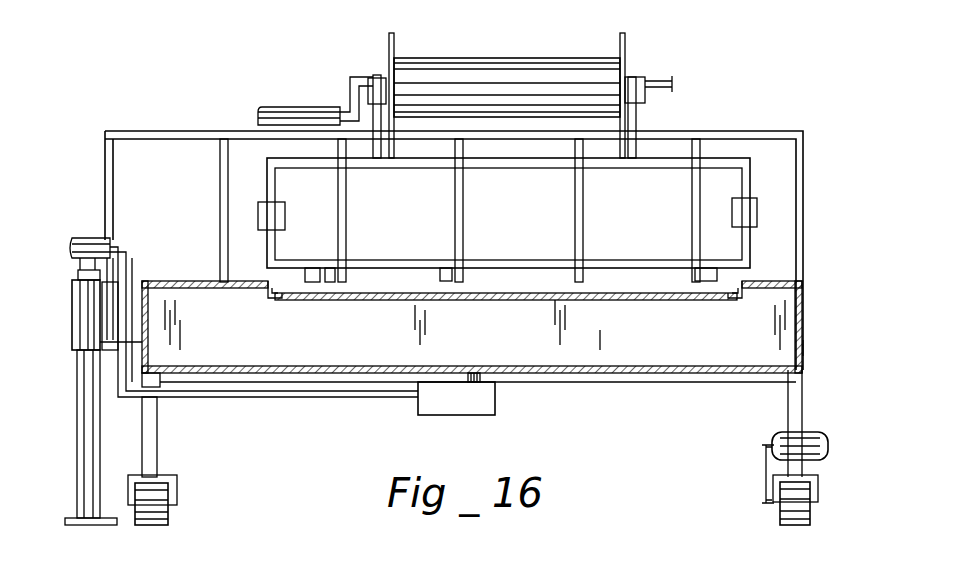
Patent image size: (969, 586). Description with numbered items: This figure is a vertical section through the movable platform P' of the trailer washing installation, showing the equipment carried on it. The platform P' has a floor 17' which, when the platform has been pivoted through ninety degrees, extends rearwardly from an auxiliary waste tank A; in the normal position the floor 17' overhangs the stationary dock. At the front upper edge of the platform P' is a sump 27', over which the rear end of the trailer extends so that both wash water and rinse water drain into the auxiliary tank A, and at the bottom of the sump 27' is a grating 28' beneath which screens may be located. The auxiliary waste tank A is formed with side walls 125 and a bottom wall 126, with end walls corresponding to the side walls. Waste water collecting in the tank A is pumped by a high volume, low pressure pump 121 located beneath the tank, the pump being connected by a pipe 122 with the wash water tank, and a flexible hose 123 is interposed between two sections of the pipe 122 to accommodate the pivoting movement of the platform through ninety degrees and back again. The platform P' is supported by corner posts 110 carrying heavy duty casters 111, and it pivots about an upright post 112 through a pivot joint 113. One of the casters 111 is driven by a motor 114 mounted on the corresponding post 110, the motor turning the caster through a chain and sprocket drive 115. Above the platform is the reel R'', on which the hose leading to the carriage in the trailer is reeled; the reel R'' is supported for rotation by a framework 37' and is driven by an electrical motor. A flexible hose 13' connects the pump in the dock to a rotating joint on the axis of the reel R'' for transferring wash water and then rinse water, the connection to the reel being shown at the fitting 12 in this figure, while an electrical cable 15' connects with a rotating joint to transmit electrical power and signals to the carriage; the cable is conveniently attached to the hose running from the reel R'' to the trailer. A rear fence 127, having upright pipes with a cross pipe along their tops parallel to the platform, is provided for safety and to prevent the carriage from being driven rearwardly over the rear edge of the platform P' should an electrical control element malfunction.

The rear fence 127 is at (740, 130).
The reel R'' is at (506, 83).
The electrical cable 15' is at (670, 70).
The elbow conduit 12 is at (358, 77).
The flexible hose 13' is at (295, 99).
The framework 37' is at (525, 211).
The floor 17' is at (504, 308).
The bottom wall 126 is at (332, 366).
The grating 28' is at (506, 318).
The sump 27' is at (505, 308).
The side walls 125 is at (148, 338).
The platform P' is at (837, 334).
The auxiliary waste tank A is at (606, 347).
The flexible hose 123 is at (92, 238).
The pivot joint 113 is at (72, 312).
The upright post 112 is at (77, 400).
The pipe 122 is at (322, 398).
The pump 121 is at (490, 414).
The corner posts 110 is at (158, 445).
The casters 111 is at (170, 505).
The motor 114 is at (829, 447).
The chain and sprocket drive 115 is at (766, 465).